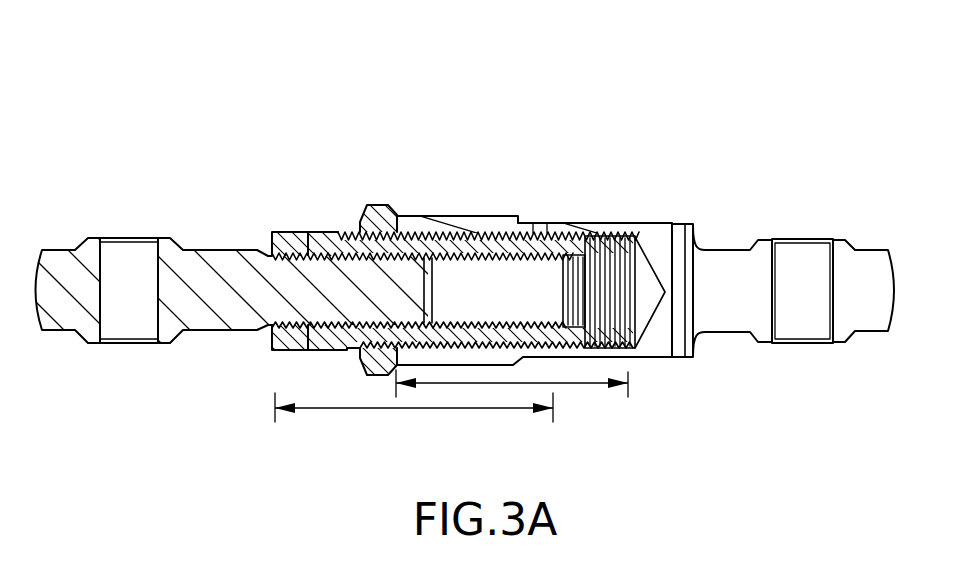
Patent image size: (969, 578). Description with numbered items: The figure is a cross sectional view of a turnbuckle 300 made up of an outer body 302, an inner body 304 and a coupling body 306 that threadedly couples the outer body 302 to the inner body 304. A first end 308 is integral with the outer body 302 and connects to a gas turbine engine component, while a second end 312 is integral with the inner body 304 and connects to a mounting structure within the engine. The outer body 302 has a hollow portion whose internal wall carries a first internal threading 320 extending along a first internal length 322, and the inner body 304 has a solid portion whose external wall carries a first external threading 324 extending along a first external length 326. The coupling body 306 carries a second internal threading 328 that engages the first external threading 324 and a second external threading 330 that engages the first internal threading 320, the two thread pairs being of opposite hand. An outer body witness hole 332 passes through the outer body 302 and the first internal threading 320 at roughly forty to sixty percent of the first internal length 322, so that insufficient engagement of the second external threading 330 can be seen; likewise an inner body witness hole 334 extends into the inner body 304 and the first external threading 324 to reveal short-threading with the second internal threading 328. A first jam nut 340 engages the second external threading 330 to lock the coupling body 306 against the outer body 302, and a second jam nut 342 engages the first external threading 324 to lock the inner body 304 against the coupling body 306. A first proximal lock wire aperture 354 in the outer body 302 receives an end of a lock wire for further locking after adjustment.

The turnbuckle 300 is at (158, 121).
The outer body 302 is at (477, 221).
The inner body 304 is at (202, 252).
The coupling body 306 is at (340, 233).
The first end 308 is at (877, 258).
The second end 312 is at (88, 248).
The first internal threading 320 is at (577, 238).
The first internal length 322 is at (595, 383).
The first external threading 324 is at (514, 247).
The first external length 326 is at (360, 407).
The second internal threading 328 is at (402, 237).
The second external threading 330 is at (433, 238).
The outer body witness hole 332 is at (543, 235).
The inner body witness hole 334 is at (440, 233).
The first jam nut 340 is at (377, 207).
The second jam nut 342 is at (300, 232).
The first proximal lock wire aperture 354 is at (677, 353).